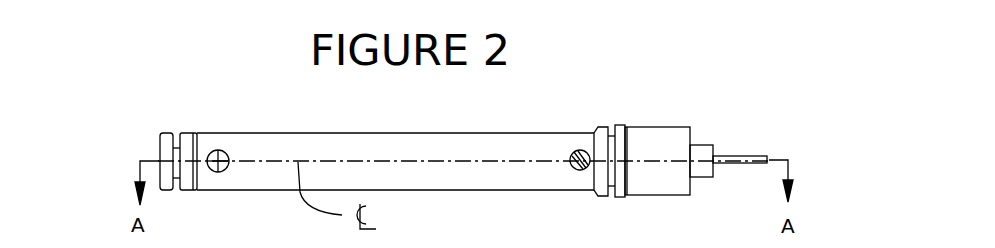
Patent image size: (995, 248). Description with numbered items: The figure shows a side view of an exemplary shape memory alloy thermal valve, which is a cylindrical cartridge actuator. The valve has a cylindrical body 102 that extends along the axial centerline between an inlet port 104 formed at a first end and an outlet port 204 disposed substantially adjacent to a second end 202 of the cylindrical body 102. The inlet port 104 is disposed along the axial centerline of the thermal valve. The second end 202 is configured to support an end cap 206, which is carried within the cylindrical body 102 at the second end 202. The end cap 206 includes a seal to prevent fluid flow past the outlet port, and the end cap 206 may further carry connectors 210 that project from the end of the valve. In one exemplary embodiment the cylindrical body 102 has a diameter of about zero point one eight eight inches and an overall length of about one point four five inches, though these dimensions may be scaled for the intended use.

The cylindrical body 102 is at (248, 133).
The inlet port 104 is at (148, 152).
The second end 202 is at (637, 197).
The outlet port 204 is at (580, 150).
The end cap 206 is at (702, 145).
The connectors 210 is at (735, 148).